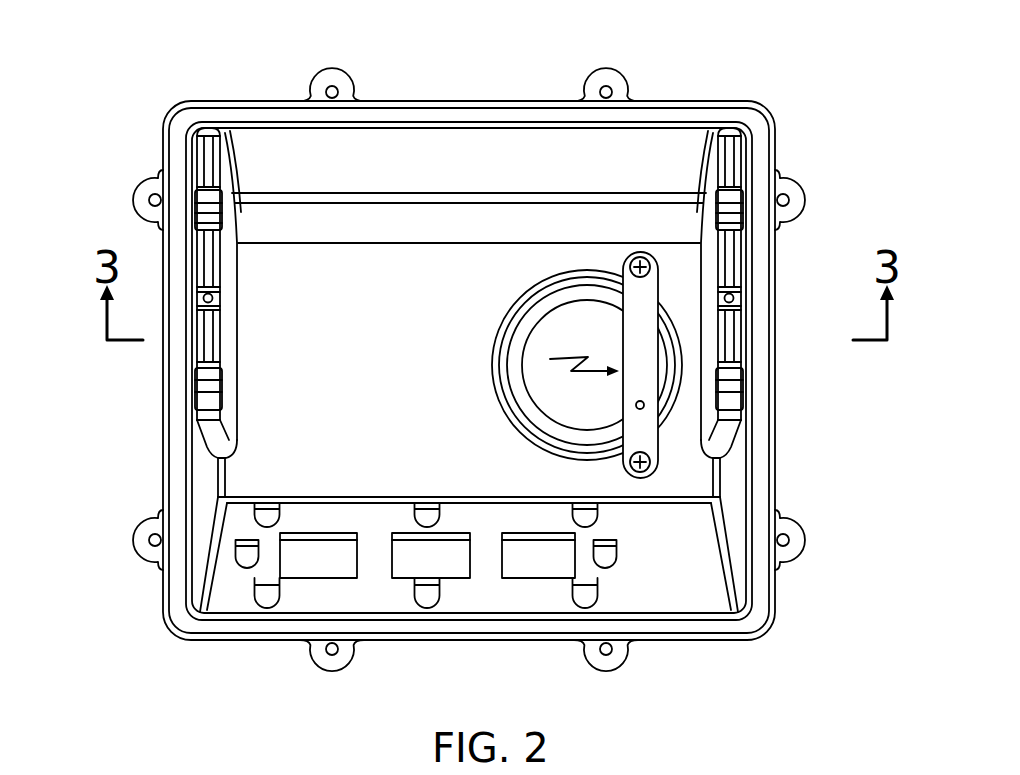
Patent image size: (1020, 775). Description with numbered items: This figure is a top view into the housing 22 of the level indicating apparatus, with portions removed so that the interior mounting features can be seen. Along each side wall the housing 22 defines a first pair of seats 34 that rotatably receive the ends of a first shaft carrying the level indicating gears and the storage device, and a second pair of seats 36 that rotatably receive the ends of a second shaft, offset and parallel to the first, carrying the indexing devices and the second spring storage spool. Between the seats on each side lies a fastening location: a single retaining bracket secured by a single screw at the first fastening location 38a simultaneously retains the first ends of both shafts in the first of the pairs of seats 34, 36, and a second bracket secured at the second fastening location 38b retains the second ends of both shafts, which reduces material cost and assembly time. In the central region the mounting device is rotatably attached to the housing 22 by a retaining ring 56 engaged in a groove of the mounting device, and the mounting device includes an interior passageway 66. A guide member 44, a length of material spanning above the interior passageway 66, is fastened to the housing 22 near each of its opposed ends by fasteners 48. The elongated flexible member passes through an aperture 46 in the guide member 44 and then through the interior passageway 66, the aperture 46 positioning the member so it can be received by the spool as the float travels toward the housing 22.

The housing 22 is at (521, 87).
The first pair of seats 34 is at (224, 385).
The second pair of seats 36 is at (225, 207).
The first fastening location 38a is at (735, 297).
The second fastening location 38b is at (214, 298).
The guide member 44 is at (568, 362).
The aperture 46 is at (635, 405).
The fasteners 48 is at (631, 259).
The retaining ring 56 is at (499, 389).
The interior passageway 66 is at (548, 337).